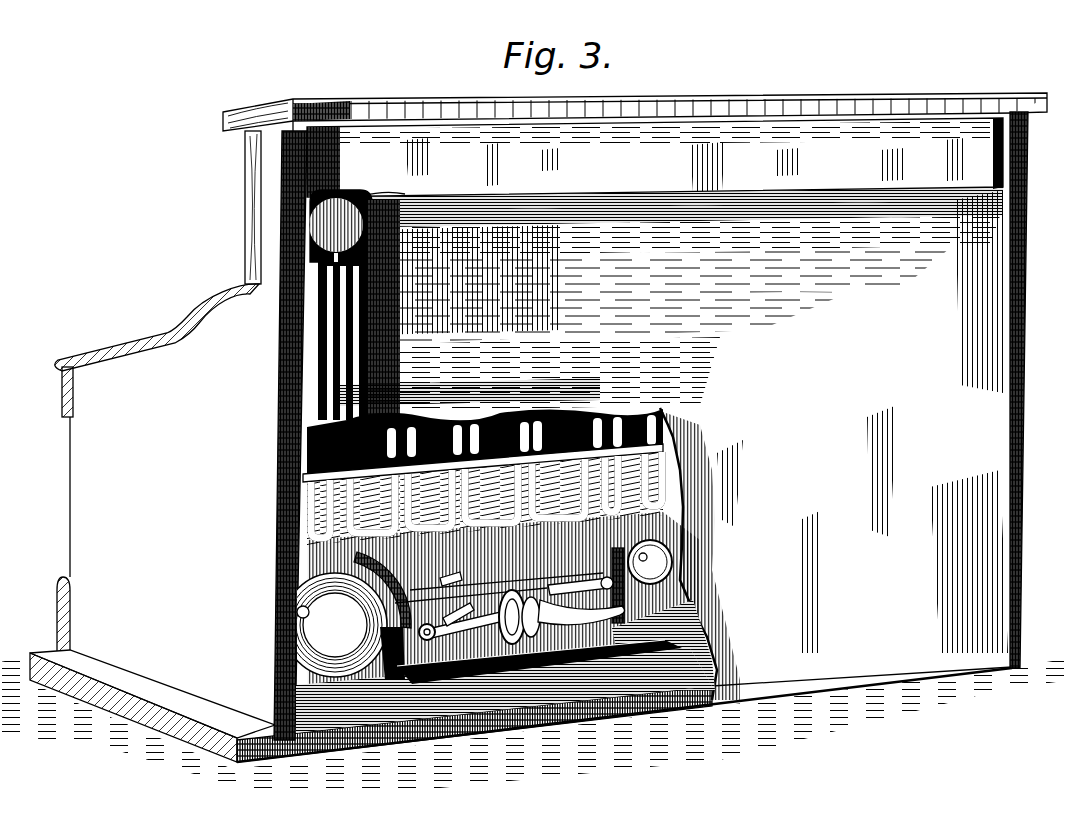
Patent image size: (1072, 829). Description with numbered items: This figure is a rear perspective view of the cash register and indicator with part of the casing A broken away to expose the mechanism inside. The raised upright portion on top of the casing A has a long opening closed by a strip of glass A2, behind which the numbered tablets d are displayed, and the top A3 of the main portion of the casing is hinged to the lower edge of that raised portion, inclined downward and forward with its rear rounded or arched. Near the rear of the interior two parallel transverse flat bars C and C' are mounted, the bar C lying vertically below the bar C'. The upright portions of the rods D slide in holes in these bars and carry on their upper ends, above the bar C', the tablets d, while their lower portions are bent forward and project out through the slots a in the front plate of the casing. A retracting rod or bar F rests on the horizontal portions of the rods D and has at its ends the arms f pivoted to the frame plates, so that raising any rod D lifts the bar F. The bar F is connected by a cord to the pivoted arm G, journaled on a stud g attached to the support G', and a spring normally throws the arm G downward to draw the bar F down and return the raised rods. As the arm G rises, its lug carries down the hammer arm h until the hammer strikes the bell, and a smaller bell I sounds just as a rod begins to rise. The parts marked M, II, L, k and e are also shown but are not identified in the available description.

The casing A is at (248, 188).
The strip of glass A2 is at (562, 168).
The top of the main portion of the casing A3 is at (213, 290).
The disks, plates, or tablets d is at (318, 229).
The upper transverse flat bar C' is at (327, 310).
The partition M is at (390, 423).
The lower transverse flat bar C is at (477, 450).
The rods D is at (345, 432).
The smaller bell I is at (676, 557).
The dial plate II is at (347, 616).
The base plate L is at (539, 662).
The stud g is at (499, 582).
The hammer arm h is at (466, 636).
The pivot k is at (427, 642).
The retracting rod or bar F is at (466, 631).
The pivoted arm G is at (519, 606).
The support G' is at (560, 624).
The arm e is at (581, 591).
The arms f is at (580, 564).
The upright slots a is at (440, 571).